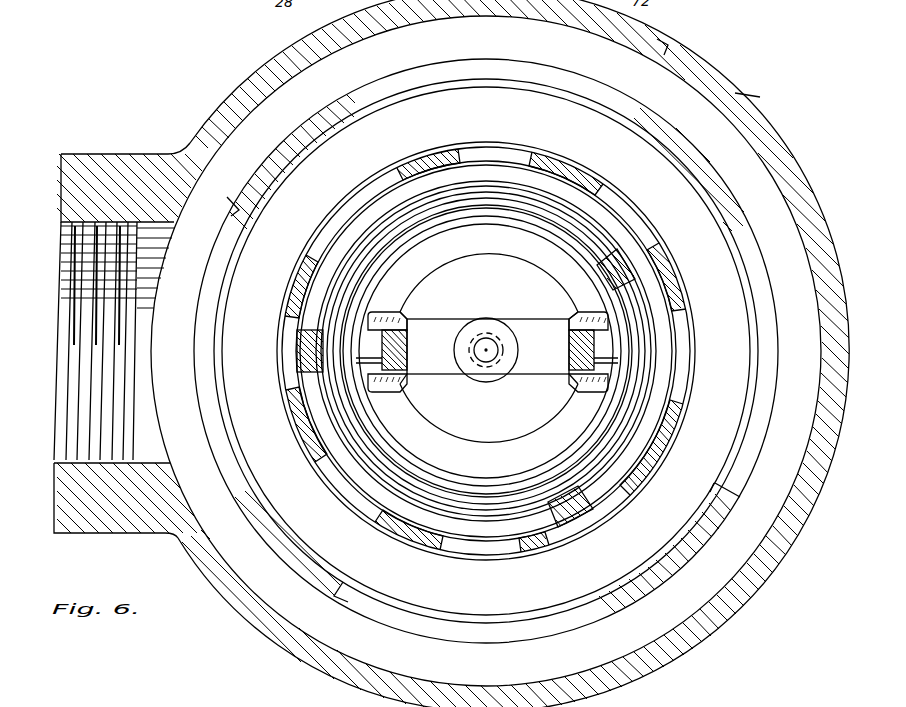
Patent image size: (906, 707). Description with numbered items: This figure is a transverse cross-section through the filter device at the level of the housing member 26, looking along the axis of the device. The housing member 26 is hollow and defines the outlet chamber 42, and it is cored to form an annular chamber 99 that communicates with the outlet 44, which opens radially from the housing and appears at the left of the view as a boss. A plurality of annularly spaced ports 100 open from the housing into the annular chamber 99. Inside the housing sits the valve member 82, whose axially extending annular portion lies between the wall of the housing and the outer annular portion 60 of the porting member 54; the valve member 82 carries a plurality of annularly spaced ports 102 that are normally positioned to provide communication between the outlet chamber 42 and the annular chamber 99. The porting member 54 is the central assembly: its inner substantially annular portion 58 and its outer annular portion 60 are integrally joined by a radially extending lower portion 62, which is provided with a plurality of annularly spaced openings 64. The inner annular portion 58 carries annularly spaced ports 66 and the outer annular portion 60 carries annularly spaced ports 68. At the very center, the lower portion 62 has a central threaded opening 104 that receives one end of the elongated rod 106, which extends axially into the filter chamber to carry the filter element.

The housing member 26 is at (722, 64).
The outlet chamber 42 is at (690, 175).
The outlet 44 is at (61, 224).
The porting member 54 is at (693, 322).
The inner substantially annular portion 58 is at (402, 314).
The outer annular portion 60 is at (670, 362).
The radially extending lower portion 62 is at (460, 248).
The annularly spaced openings 64 is at (500, 254).
The annularly spaced ports 66 is at (575, 312).
The annularly spaced ports 68 is at (290, 330).
The valve member 82 is at (685, 272).
The annular chamber 99 is at (715, 112).
The annularly spaced ports 100 is at (227, 198).
The annularly spaced ports 102 is at (398, 169).
The central threaded opening 104 is at (484, 364).
The elongated rod 106 is at (495, 330).